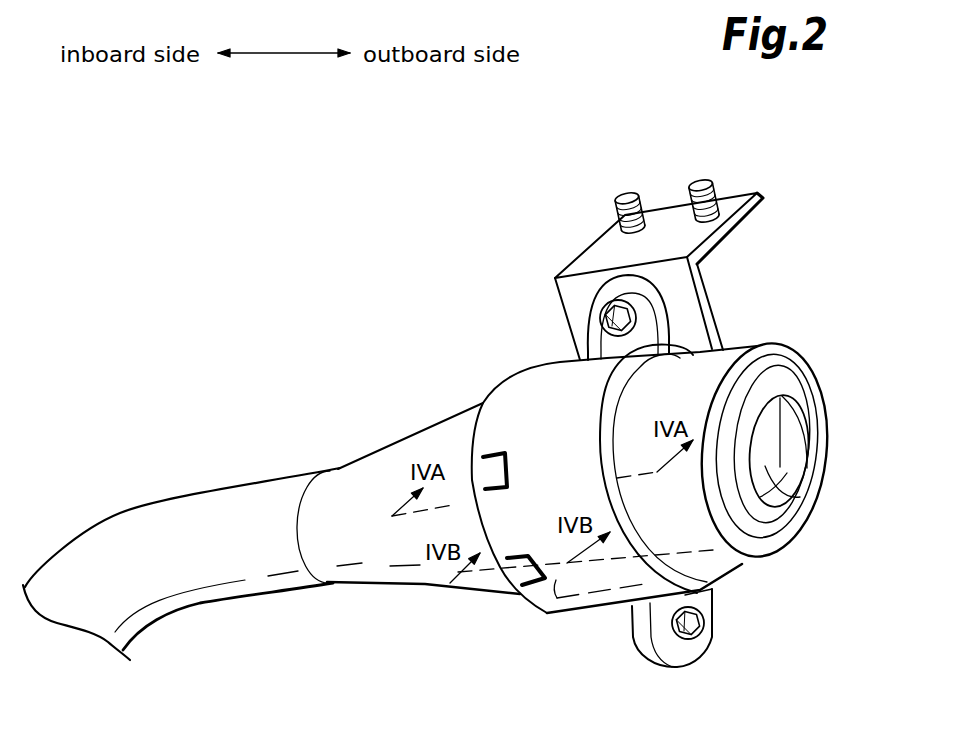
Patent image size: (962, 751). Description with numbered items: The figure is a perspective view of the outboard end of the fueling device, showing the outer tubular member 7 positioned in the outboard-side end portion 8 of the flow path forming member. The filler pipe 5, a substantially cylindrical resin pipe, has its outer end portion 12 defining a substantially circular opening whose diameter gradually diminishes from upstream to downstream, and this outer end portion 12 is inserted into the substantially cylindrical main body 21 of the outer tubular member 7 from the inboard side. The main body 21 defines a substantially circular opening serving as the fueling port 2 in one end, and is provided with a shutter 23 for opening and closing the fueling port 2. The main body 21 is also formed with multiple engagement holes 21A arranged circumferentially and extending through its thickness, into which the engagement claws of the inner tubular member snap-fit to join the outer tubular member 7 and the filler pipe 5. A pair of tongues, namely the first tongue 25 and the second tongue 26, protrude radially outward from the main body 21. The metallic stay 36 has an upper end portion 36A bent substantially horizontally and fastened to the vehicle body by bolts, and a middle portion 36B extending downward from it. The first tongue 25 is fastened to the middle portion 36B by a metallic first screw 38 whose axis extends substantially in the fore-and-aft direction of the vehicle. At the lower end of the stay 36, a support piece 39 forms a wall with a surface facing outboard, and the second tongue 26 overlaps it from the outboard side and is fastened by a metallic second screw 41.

The fueling port 2 is at (800, 467).
The filler pipe 5 is at (210, 496).
The outer tubular member 7 is at (553, 368).
The outboard-side end portion 8 is at (742, 595).
The outer end portion 12 is at (483, 392).
The main body 21 is at (703, 370).
The engagement holes 21A is at (515, 560).
The shutter 23 is at (767, 465).
The first tongue 25 is at (598, 300).
The second tongue 26 is at (697, 652).
The stay 36 is at (691, 253).
The upper end portion 36A is at (736, 195).
The middle portion 36B is at (690, 305).
The first screw 38 is at (598, 301).
The support piece 39 is at (643, 650).
The second screw 41 is at (700, 625).